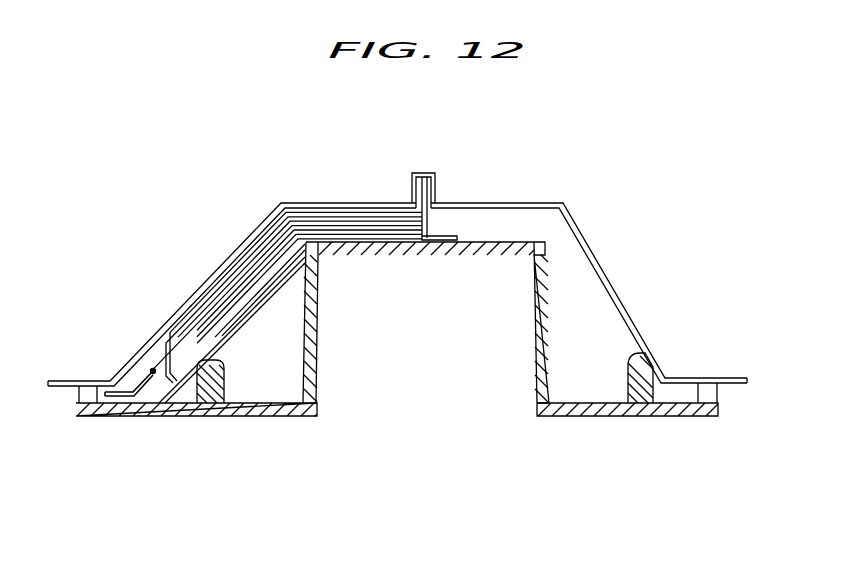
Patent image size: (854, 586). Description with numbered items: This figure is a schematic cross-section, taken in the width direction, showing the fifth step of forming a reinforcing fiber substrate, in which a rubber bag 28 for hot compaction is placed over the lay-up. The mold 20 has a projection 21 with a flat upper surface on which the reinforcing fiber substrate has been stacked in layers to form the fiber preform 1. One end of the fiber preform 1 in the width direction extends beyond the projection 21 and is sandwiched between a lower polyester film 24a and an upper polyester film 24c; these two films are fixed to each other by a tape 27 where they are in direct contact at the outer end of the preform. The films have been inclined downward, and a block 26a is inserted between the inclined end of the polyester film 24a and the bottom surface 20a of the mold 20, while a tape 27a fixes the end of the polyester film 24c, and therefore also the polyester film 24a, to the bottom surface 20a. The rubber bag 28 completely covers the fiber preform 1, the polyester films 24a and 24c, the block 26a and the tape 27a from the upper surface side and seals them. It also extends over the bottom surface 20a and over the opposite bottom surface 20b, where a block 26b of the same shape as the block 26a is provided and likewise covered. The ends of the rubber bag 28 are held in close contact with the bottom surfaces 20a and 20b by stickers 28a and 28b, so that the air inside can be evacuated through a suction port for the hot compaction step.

The fiber preform 1 is at (234, 266).
The mold 20 is at (426, 352).
The bottom surface of the mold 20a is at (273, 403).
The bottom surface of the mold 20b is at (583, 403).
The projection 21 is at (383, 251).
The polyester film 24a is at (248, 318).
The polyester film 24c is at (210, 289).
The block 26a is at (211, 393).
The block 26b is at (642, 392).
The tape 27 is at (152, 369).
The tape 27a is at (108, 386).
The rubber bag for hot compaction 28 is at (480, 203).
The sticker 28a is at (94, 398).
The sticker 28b is at (710, 390).